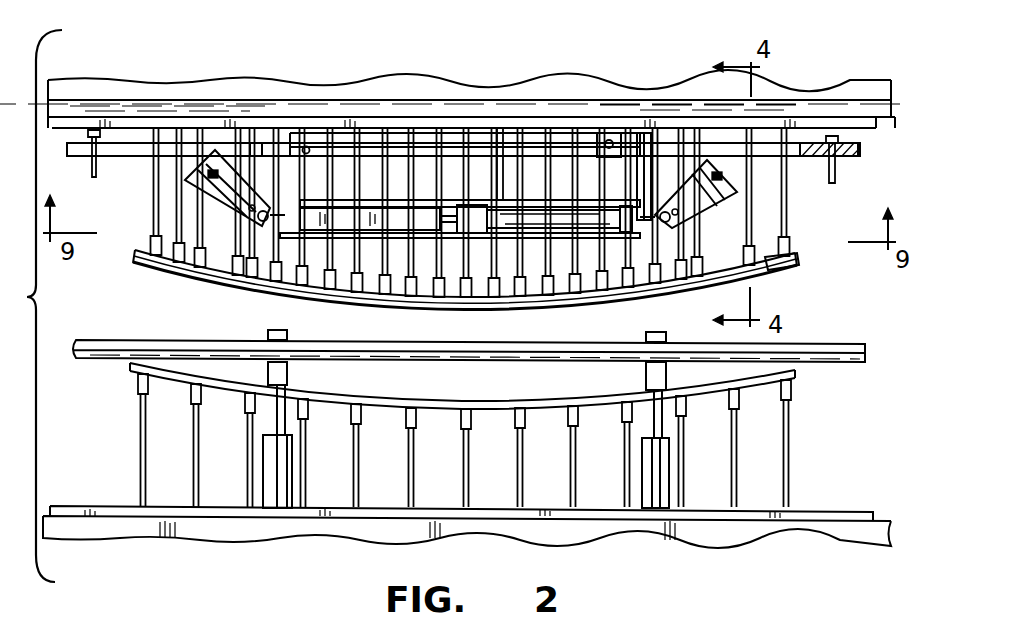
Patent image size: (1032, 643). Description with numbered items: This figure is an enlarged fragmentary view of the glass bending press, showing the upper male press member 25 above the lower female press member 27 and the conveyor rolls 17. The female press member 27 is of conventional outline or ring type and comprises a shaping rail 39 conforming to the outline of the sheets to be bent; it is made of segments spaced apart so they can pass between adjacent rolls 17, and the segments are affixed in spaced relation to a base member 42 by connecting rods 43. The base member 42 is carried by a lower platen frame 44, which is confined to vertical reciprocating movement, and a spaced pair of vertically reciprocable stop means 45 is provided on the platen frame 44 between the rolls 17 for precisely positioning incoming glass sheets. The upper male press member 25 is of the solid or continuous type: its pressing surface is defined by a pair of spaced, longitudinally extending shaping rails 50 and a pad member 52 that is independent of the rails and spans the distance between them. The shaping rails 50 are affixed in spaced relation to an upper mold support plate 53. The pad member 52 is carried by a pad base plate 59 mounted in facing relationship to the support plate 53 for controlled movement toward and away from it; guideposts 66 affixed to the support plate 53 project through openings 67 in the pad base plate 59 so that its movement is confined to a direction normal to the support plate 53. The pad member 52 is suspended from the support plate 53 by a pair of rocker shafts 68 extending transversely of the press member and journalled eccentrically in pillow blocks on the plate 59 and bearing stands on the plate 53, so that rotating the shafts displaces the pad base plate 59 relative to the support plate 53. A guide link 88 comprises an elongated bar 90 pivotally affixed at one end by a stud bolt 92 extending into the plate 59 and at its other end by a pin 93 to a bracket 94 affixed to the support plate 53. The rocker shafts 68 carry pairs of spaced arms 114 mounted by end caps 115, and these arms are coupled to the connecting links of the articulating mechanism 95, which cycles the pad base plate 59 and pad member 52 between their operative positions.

The rolls 17 is at (97, 358).
The upper male press member 25 is at (454, 180).
The female press member 27 is at (472, 459).
The shaping rail 39 is at (448, 392).
The base member 42 is at (822, 509).
The connecting rods 43 is at (787, 464).
The lower platen frame 44 is at (721, 535).
The stop means 45 is at (292, 373).
The shaping rails 50 is at (157, 265).
The pad member 52 is at (786, 277).
The upper mold support plate 53 is at (114, 124).
The pad base plate 59 is at (852, 152).
The guideposts 66 is at (100, 173).
The openings 67 is at (846, 162).
The rocker shafts 68 is at (212, 158).
The guide link 88 is at (392, 134).
The elongated bar 90 is at (501, 145).
The stud bolt 92 is at (308, 146).
The pin 93 is at (617, 141).
The pivot block 94 is at (604, 137).
The articulating mechanism 95 is at (312, 248).
The arms 114 is at (228, 198).
The end caps 115 is at (205, 162).